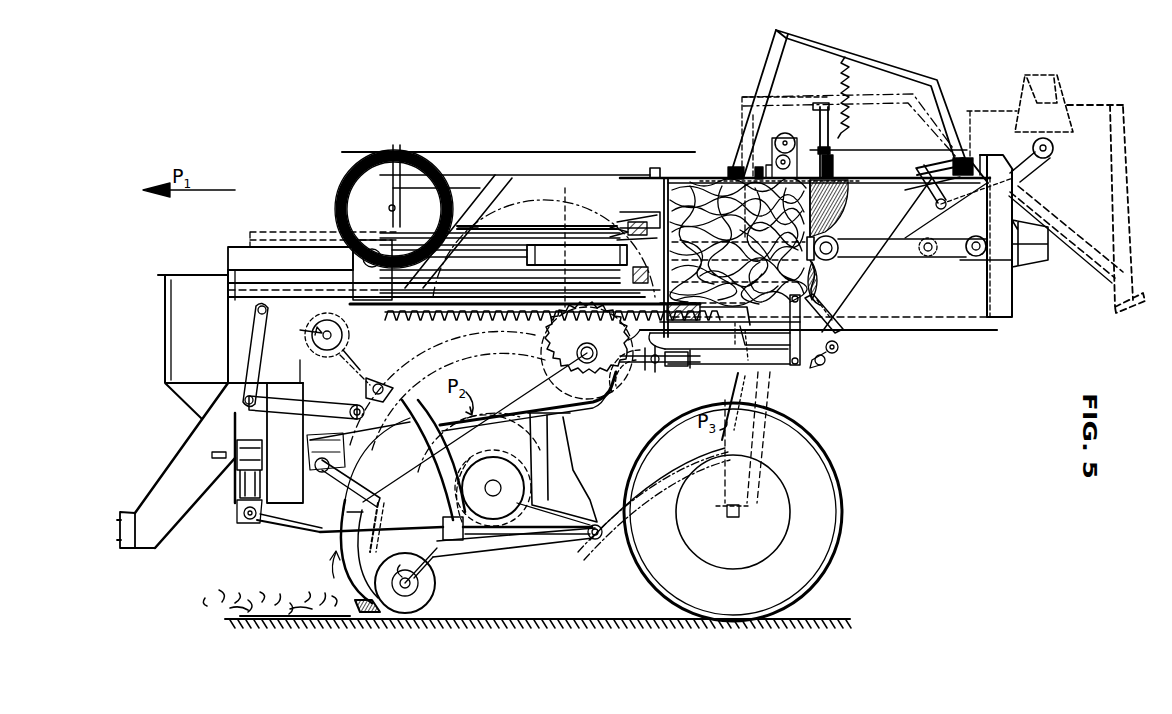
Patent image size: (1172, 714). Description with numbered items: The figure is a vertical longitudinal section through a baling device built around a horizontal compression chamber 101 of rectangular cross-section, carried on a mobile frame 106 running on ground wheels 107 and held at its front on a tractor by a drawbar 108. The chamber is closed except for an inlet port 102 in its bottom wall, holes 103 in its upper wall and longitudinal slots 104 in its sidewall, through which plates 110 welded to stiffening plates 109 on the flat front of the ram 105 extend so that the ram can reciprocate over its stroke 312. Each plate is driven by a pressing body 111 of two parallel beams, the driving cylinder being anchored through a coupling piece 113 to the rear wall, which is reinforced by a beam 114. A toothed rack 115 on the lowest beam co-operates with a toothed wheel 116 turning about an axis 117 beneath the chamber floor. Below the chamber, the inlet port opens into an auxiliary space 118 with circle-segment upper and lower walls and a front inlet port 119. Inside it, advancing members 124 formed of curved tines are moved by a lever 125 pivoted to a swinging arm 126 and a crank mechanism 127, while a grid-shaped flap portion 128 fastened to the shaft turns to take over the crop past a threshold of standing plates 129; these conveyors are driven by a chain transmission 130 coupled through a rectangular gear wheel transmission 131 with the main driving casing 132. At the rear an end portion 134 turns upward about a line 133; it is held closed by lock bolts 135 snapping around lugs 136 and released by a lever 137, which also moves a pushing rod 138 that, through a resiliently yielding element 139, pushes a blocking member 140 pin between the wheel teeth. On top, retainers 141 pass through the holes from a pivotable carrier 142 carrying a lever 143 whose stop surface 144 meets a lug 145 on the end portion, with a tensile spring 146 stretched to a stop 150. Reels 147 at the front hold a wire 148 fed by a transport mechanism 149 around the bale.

The compression chamber 101 is at (698, 188).
The inlet port 102 is at (704, 321).
The holes 103 is at (730, 173).
The longitudinal slots 104 is at (528, 230).
The ram 105 is at (633, 212).
The mobile frame 106 is at (244, 258).
The ground wheels 107 is at (817, 448).
The drawbar 108 is at (160, 480).
The stiffening plates 109 is at (613, 210).
The plates 110 is at (630, 233).
The pressing body 111 is at (522, 230).
The coupling piece 113 is at (895, 249).
The beam 114 is at (1023, 268).
The toothed rack 115 is at (492, 322).
The toothed wheel 116 is at (630, 378).
The axis 117 is at (553, 366).
The auxiliary space 118 is at (620, 458).
The inlet port 119 is at (418, 512).
The advancing members 124 is at (343, 448).
The lever 125 is at (306, 400).
The swinging arm 126 is at (247, 356).
The crank mechanism 127 is at (360, 393).
The grid-shaped flap portion 128 is at (690, 362).
The standing plates 129 is at (542, 544).
The sprocket 130 is at (355, 340).
The rectangular gear wheel transmission 131 is at (317, 357).
The main driving casing 132 is at (292, 467).
The line 133 is at (982, 134).
The end portion 134 is at (1097, 150).
The lock bolts 135 is at (832, 361).
The lugs 136 is at (843, 341).
The lever 137 is at (843, 315).
The pushing rod 138 is at (782, 363).
The resiliently yielding element 139 is at (681, 372).
The blocking member 140 is at (658, 368).
The retainers 141 is at (760, 87).
The pivotable carrier 142 is at (885, 63).
The lever 143 is at (923, 163).
The stop surface 144 is at (930, 198).
The lug 145 is at (952, 210).
The tensile spring 146 is at (823, 84).
The reels 147 is at (370, 190).
The wire 148 is at (478, 135).
The transport mechanism 149 is at (800, 118).
The stop 150 is at (827, 147).
The plunger stroke 312 is at (583, 240).